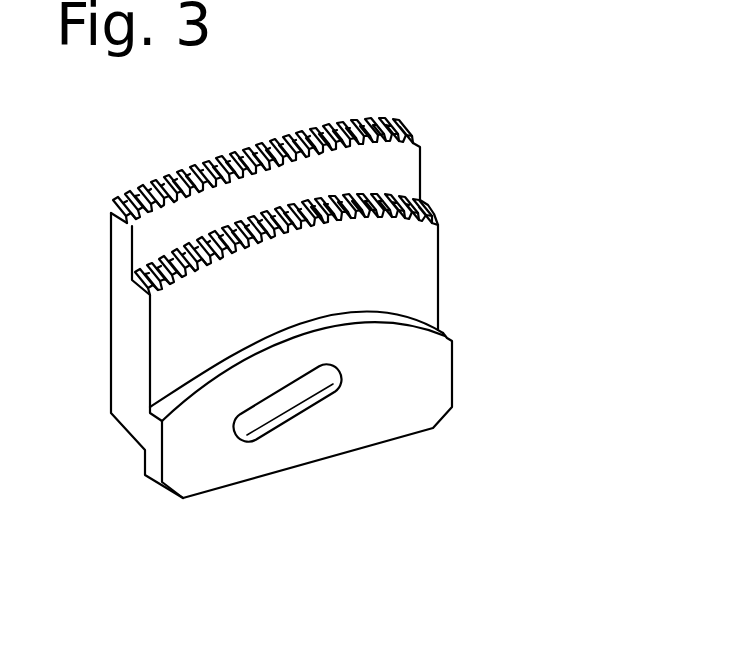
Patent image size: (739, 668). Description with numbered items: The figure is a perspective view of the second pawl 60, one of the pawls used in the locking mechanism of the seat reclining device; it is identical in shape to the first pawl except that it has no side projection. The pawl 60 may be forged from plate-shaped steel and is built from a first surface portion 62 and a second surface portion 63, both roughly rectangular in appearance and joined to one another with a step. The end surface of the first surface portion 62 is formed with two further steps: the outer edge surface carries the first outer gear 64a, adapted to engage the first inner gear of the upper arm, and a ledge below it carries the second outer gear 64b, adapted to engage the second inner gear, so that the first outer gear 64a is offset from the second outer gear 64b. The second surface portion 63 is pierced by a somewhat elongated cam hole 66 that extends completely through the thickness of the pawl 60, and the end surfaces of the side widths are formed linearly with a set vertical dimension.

The second pawl 60 is at (462, 372).
The first surface portion 62 is at (425, 273).
The second surface portion 63 is at (407, 418).
The first outer gear 64a is at (358, 116).
The second outer gear 64b is at (378, 193).
The cam hole 66 is at (280, 408).